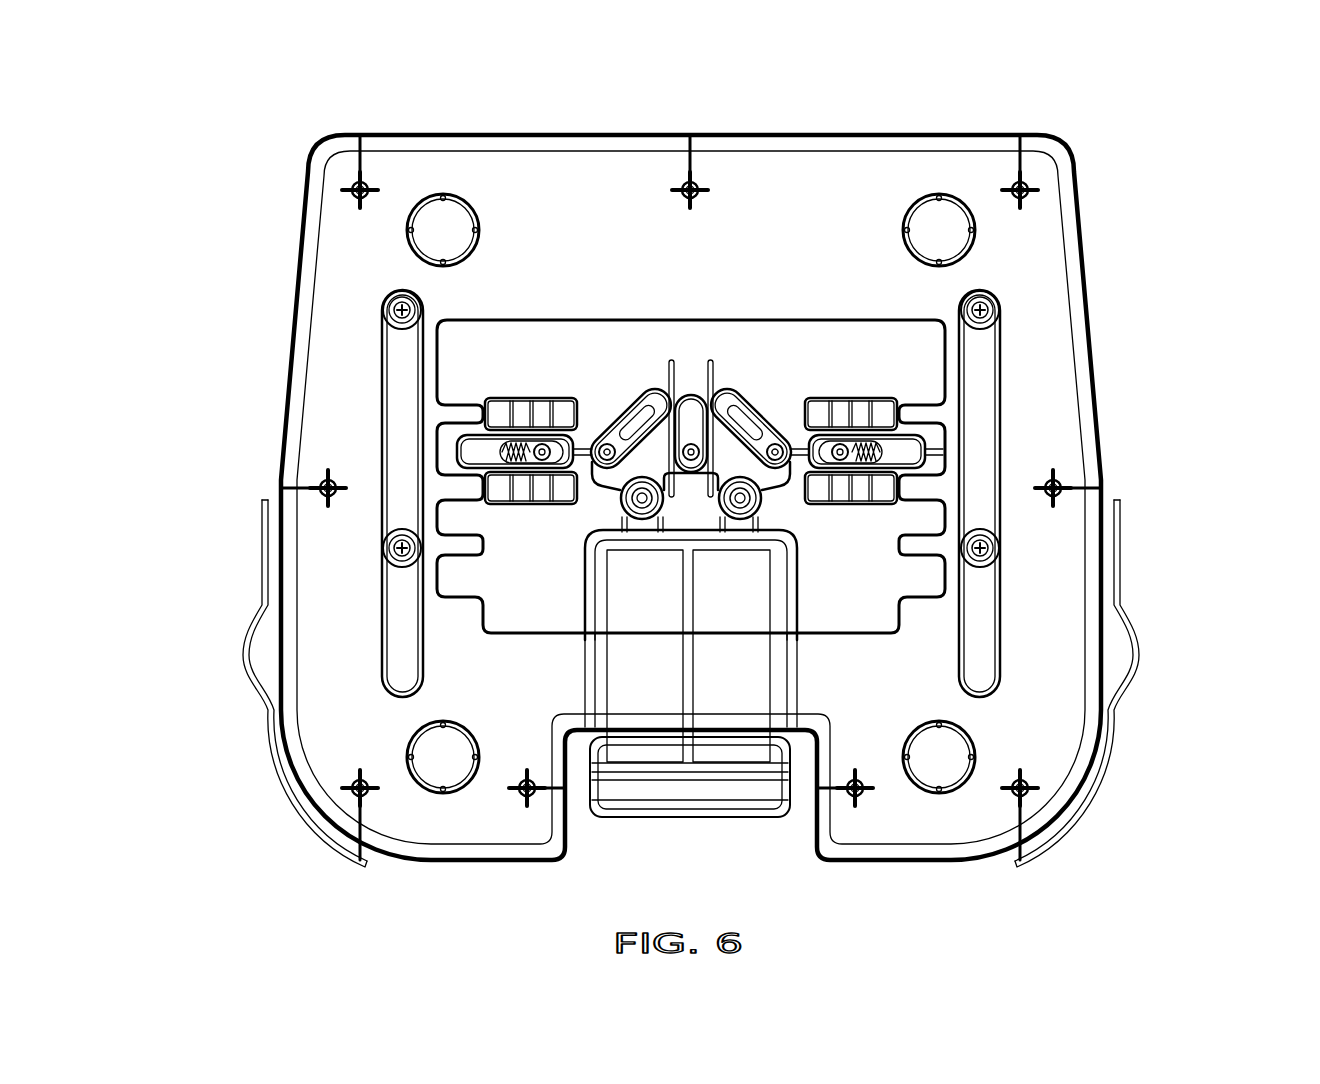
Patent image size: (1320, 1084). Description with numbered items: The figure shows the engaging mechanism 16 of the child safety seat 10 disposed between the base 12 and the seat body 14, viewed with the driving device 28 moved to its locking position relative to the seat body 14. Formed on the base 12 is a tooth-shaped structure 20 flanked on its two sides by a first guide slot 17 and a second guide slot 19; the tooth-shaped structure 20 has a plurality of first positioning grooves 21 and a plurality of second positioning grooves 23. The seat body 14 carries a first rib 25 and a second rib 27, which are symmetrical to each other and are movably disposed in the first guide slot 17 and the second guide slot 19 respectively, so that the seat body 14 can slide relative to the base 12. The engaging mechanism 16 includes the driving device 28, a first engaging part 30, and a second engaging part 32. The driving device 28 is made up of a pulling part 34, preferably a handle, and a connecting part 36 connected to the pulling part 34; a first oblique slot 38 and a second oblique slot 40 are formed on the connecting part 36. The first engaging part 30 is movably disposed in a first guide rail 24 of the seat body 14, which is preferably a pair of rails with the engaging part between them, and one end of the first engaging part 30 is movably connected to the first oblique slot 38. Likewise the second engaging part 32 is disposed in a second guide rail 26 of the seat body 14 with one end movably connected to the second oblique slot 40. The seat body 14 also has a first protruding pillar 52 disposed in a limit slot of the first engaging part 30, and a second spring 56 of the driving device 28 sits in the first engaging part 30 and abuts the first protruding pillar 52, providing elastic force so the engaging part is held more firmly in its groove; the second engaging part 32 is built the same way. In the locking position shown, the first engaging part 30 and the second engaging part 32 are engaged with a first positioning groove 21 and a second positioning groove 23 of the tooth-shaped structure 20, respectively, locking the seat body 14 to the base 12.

The child safety seat 10 is at (1128, 118).
The base 12 is at (732, 670).
The seat body 14 is at (657, 118).
The engaging mechanism 16 is at (752, 392).
The first guide slot 17 is at (985, 648).
The second guide slot 19 is at (403, 655).
The tooth-shaped structure 20 is at (474, 310).
The first positioning groove 21 is at (947, 452).
The second positioning groove 23 is at (445, 458).
The first guide rail 24 is at (818, 410).
The first rib 25 is at (975, 345).
The second guide rail 26 is at (565, 395).
The second rib 27 is at (400, 345).
The driving device 28 is at (207, 680).
The first engaging part 30 is at (928, 447).
The second engaging part 32 is at (458, 452).
The pulling part 34 is at (603, 608).
The connecting part 36 is at (630, 472).
The first oblique slot 38 is at (733, 420).
The second oblique slot 40 is at (630, 423).
The first protruding pillar 52 is at (540, 450).
The second spring 56 is at (512, 445).